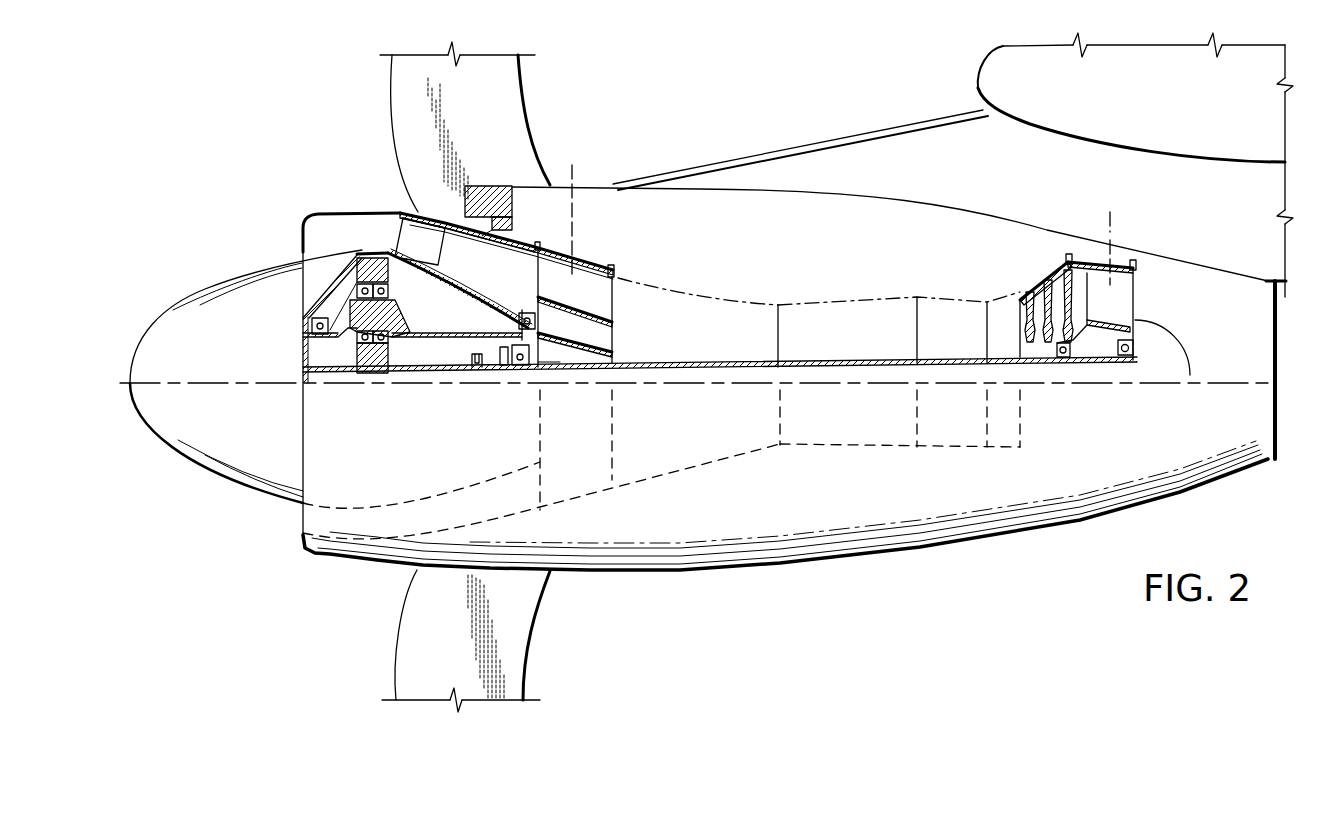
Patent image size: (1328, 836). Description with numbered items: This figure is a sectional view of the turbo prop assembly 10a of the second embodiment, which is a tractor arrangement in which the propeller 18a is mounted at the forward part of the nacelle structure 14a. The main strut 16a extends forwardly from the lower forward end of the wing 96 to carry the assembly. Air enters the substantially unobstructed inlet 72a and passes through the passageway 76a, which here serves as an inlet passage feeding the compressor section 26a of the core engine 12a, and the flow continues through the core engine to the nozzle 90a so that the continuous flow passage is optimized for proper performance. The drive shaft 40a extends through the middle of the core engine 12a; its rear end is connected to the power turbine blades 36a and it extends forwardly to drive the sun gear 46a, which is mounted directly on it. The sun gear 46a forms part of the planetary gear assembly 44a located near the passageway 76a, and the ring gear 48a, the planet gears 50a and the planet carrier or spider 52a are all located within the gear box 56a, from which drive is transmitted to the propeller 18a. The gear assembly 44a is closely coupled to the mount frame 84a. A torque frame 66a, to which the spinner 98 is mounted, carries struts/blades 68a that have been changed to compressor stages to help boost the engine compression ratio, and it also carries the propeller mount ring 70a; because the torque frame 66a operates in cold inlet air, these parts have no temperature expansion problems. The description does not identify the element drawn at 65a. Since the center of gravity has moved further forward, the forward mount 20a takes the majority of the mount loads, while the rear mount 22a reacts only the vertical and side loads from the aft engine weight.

The turbo prop assembly 10a is at (691, 150).
The core engine 12a is at (835, 293).
The nacelle structure 14a is at (372, 253).
The main strut 16a is at (907, 137).
The propeller 18a is at (400, 107).
The forward mount 20a is at (577, 197).
The rear mount 22a is at (1113, 223).
The compressor section 26a is at (707, 290).
The power turbine blades 36a is at (1053, 272).
The drive shaft 40a is at (513, 366).
The planetary gear assembly 44a is at (348, 358).
The sun gear 46a is at (377, 374).
The ring gear 48a is at (350, 258).
The planet gears 50a is at (333, 282).
The planet carrier or spider 52a is at (342, 317).
The gear box 56a is at (360, 252).
The bearing 65a is at (340, 263).
The torque frame 66a is at (396, 250).
The struts/blades 68a is at (405, 213).
The propeller mount ring 70a is at (500, 190).
The inlet 72a is at (313, 240).
The passageway 76a is at (518, 243).
The mount frame 84a is at (587, 260).
The nozzle 90a is at (1260, 330).
The wing 96 is at (980, 88).
The spinner 98 is at (175, 323).